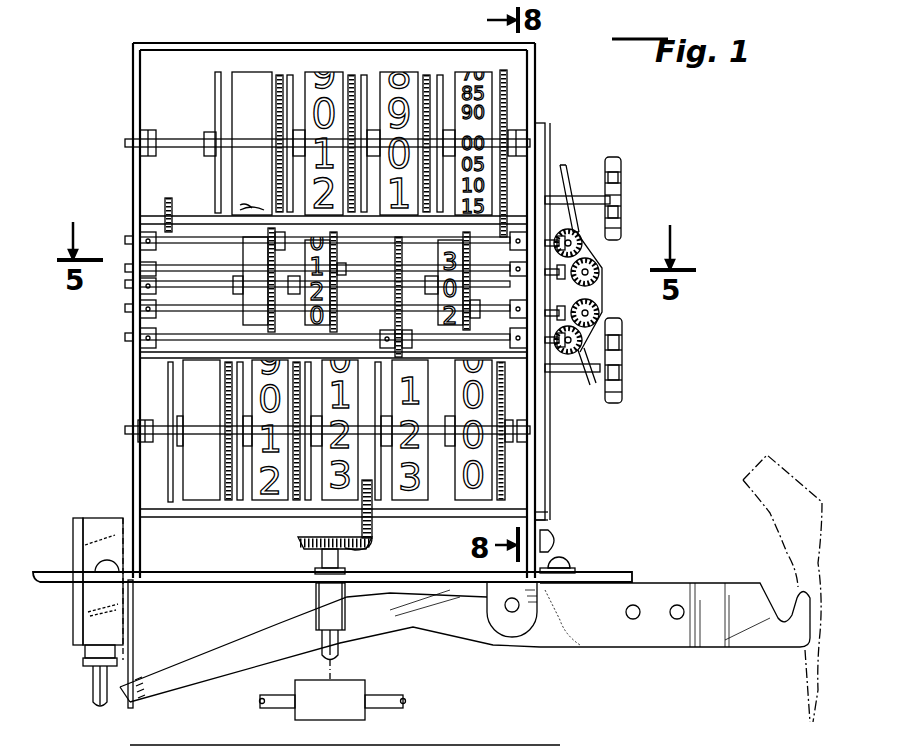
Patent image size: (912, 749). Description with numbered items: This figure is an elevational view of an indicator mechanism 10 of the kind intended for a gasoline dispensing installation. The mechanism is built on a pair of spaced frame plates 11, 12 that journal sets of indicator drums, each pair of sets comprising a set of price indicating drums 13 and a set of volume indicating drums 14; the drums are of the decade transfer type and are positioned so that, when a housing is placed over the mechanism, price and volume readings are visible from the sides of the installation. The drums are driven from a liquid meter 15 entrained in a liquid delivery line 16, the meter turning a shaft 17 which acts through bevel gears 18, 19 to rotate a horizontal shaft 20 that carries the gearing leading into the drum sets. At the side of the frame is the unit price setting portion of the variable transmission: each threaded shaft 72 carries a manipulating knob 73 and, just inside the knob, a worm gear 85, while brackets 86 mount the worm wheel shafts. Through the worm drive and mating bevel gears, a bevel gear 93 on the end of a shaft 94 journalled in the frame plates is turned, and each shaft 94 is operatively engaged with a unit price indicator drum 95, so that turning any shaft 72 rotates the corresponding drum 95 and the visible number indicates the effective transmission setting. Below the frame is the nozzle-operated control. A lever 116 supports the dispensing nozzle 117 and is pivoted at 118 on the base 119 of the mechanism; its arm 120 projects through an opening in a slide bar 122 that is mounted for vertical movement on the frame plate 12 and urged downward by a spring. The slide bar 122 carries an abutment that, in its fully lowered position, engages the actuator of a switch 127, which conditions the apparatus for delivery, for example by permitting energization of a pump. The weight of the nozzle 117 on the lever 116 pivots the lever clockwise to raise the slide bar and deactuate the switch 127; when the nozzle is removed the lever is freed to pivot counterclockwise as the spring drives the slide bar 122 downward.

The indicator mechanism 10 is at (376, 36).
The frame plate 11 is at (537, 80).
The frame plate 12 is at (132, 103).
The price indicating drums 13 is at (198, 500).
The volume indicating drums 14 is at (248, 72).
The liquid meter 15 is at (350, 697).
The liquid delivery line 16 is at (387, 709).
The shaft 17 is at (340, 646).
The bevel gear 18 is at (298, 544).
The bevel gear 19 is at (375, 522).
The horizontal shaft 20 is at (441, 517).
The threaded shaft 72 is at (579, 195).
The manipulating knob 73 is at (621, 199).
The worm gear 85 is at (566, 178).
The bracket 86 is at (595, 304).
The bevel gear 93 is at (592, 265).
The shaft 94 is at (567, 287).
The unit price indicator drum 95 is at (243, 318).
The lever 116 is at (652, 640).
The dispensing nozzle 117 is at (757, 512).
The pivot 118 is at (512, 612).
The base 119 is at (564, 548).
The arm 120 is at (147, 676).
The slide bar 122 is at (133, 706).
The switch 127 is at (84, 518).